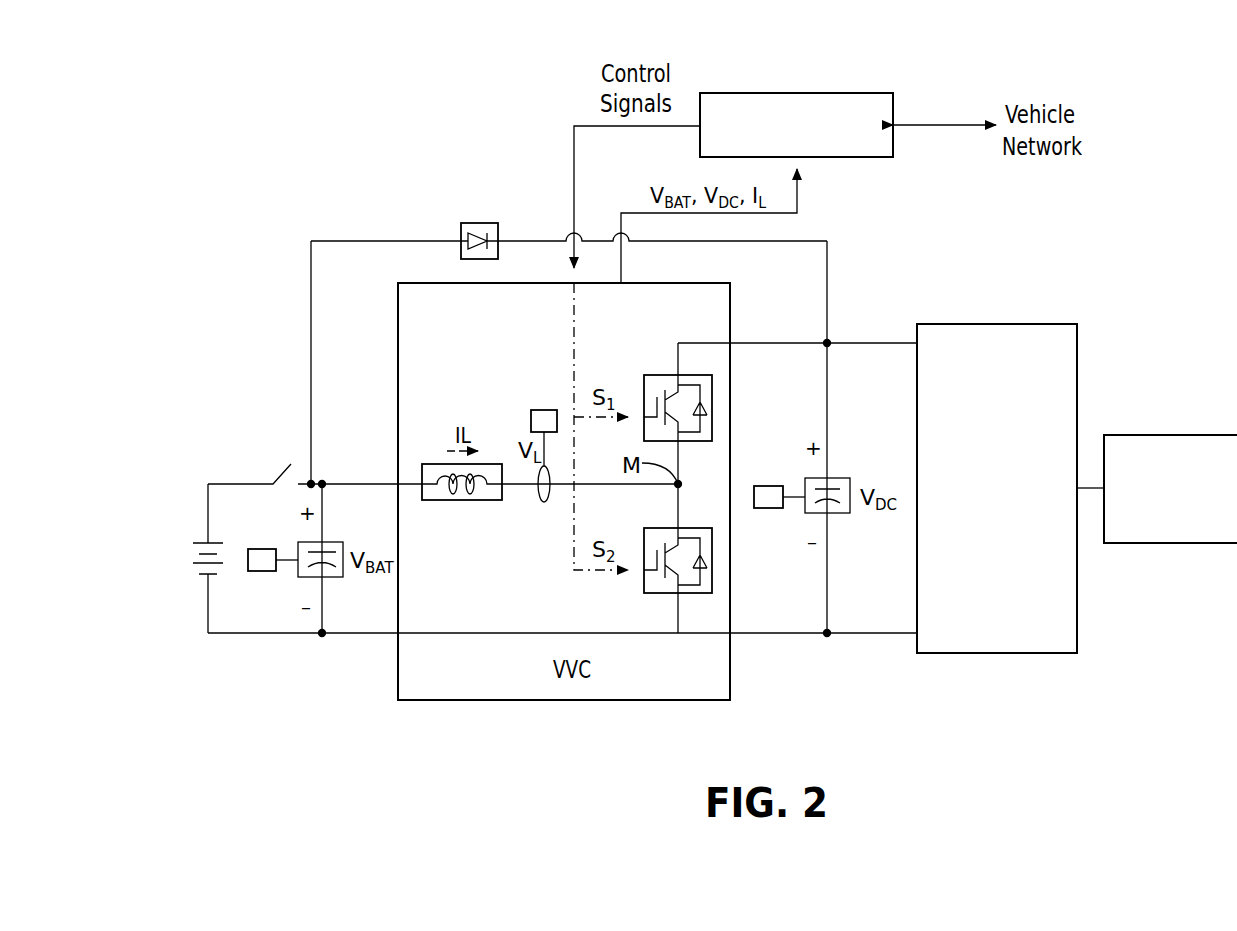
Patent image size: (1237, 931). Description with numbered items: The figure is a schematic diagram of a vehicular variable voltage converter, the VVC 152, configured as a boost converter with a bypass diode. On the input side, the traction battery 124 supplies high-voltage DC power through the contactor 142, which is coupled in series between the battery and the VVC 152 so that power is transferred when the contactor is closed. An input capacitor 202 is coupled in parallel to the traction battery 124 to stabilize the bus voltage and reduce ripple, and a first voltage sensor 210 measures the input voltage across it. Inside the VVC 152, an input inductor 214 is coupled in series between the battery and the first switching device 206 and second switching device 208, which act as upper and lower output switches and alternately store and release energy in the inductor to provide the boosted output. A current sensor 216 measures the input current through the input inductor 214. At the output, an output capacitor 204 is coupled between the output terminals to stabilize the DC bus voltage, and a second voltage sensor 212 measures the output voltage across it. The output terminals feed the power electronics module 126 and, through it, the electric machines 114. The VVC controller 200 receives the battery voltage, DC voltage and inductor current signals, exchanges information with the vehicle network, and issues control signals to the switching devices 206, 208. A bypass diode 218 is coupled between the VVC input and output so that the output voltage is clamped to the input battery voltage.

The VVC controller 200 is at (797, 93).
The bypass diode 218 is at (478, 223).
The power electronics module 126 is at (975, 324).
The electric machines 114 is at (1152, 435).
The contactor 142 is at (282, 472).
The traction battery 124 is at (190, 548).
The first voltage sensor 210 is at (272, 549).
The input capacitor 202 is at (328, 542).
The input inductor 214 is at (462, 500).
The current sensor 216 is at (544, 410).
The first switching device 206 is at (662, 375).
The second switching device 208 is at (663, 528).
The second voltage sensor 212 is at (772, 486).
The output capacitor 204 is at (838, 478).
The variable voltage converter 152 is at (567, 700).